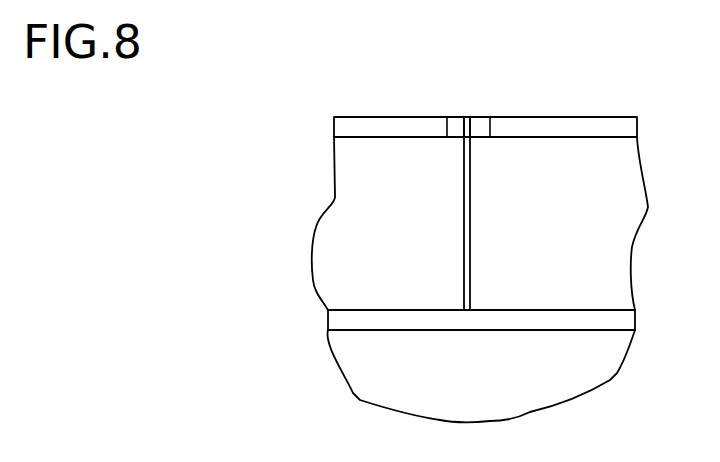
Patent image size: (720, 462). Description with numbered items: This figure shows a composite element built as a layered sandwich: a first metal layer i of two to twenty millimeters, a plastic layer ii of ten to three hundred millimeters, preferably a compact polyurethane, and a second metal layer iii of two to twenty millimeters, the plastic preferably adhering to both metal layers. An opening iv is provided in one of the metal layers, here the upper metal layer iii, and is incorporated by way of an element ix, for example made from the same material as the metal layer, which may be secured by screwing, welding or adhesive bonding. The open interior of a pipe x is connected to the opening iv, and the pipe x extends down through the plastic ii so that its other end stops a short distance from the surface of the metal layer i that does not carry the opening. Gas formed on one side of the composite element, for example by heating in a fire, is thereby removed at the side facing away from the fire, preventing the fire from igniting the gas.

The metal layer i is at (356, 318).
The plastic layer ii is at (612, 195).
The metal layer iii is at (350, 123).
The opening iv is at (487, 131).
The element having the opening ix is at (480, 123).
The pipe x is at (470, 240).